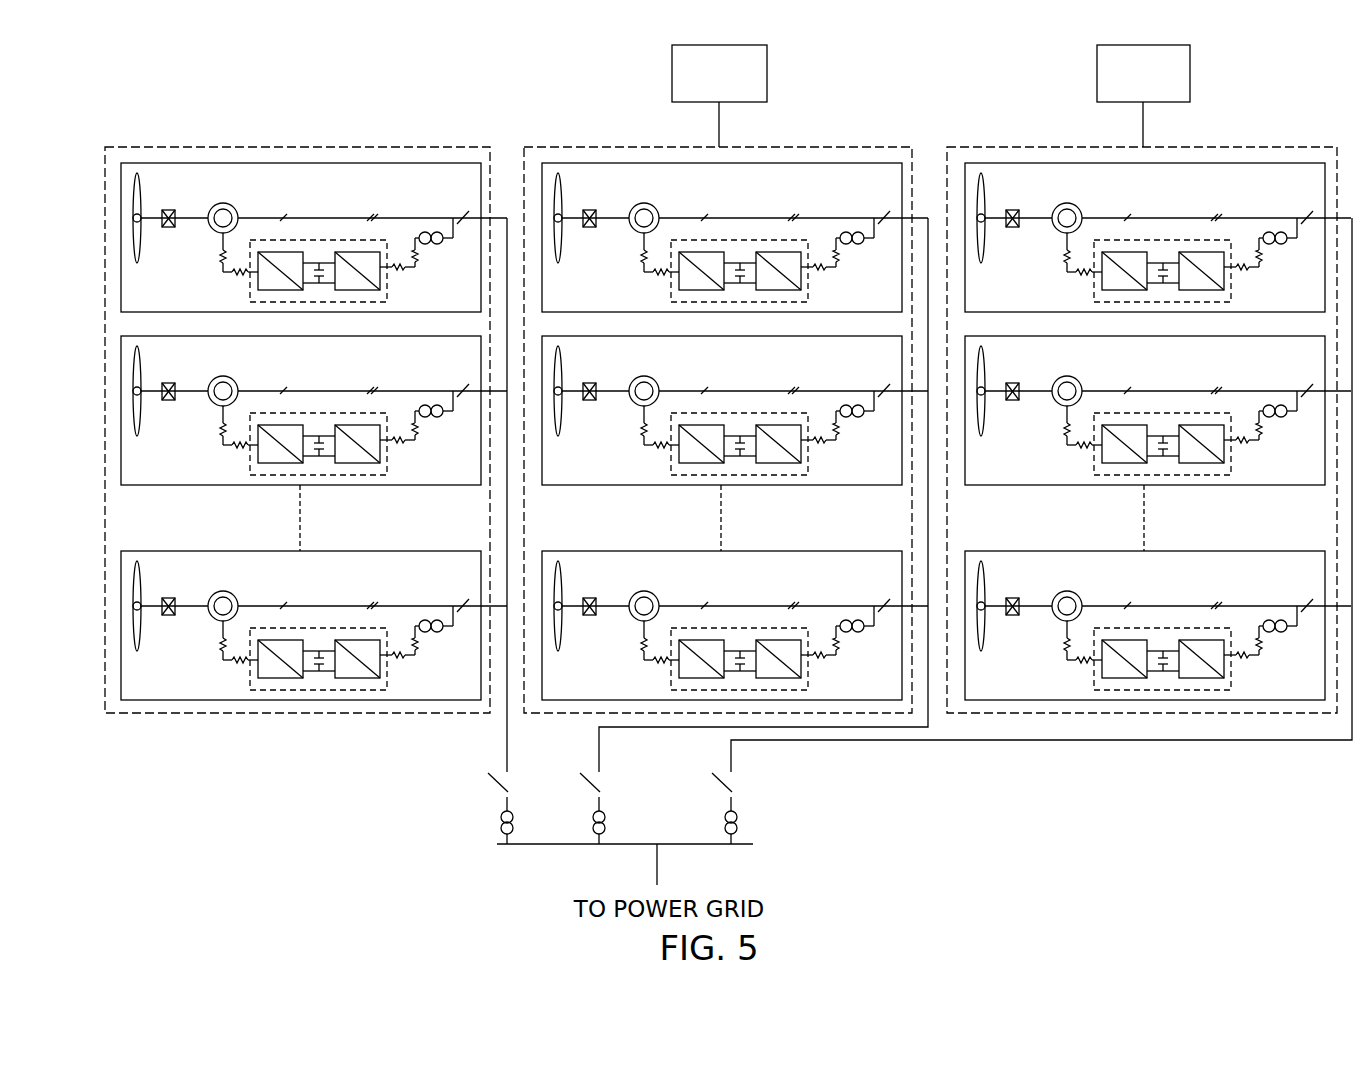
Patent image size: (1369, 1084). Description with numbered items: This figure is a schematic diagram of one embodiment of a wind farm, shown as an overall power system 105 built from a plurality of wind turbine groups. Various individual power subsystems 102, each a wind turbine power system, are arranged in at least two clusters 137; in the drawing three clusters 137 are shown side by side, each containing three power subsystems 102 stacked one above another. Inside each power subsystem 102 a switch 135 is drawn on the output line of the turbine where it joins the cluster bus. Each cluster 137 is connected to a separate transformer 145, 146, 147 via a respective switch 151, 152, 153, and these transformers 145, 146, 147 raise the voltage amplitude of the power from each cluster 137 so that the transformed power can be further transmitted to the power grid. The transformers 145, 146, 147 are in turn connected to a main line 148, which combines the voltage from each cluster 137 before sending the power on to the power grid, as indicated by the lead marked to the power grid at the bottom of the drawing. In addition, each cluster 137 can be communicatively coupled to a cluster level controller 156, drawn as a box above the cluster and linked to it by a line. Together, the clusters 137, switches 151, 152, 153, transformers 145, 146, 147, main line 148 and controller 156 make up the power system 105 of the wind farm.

The power system 105 is at (696, 425).
The power subsystem 102 is at (121, 230).
The turbine breaker / switch 135 is at (450, 208).
The cluster 137 is at (105, 352).
The cluster level controller 156 is at (700, 85).
The switch 151 is at (500, 758).
The switch 152 is at (592, 758).
The cluster breaker 153 is at (729, 772).
The transformer 145 is at (500, 813).
The transformer 146 is at (592, 813).
The transformer 147 is at (724, 813).
The main line 148 is at (545, 848).